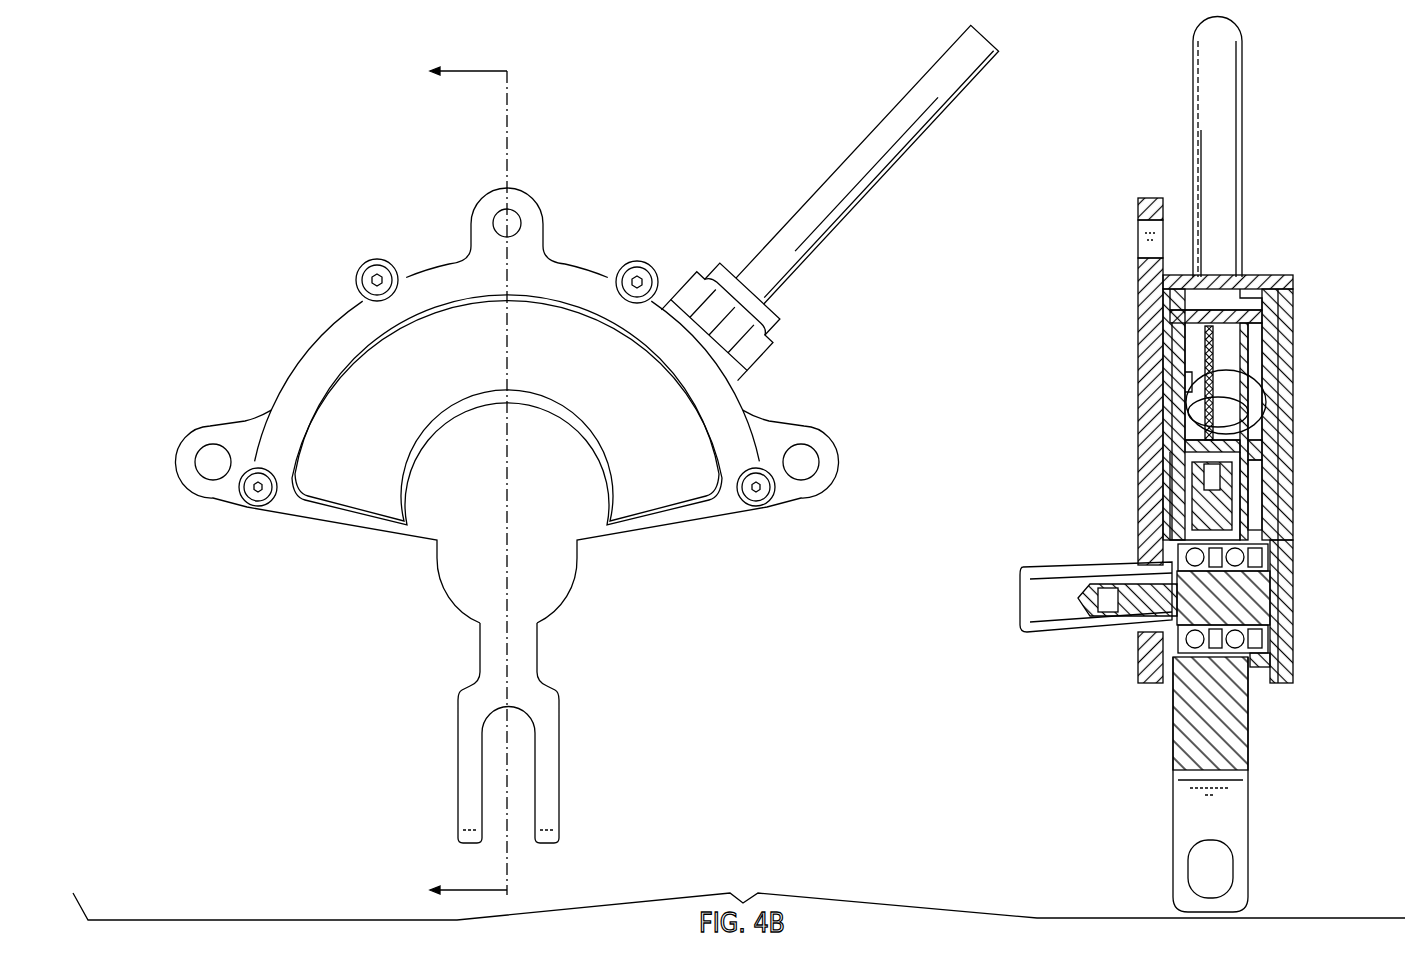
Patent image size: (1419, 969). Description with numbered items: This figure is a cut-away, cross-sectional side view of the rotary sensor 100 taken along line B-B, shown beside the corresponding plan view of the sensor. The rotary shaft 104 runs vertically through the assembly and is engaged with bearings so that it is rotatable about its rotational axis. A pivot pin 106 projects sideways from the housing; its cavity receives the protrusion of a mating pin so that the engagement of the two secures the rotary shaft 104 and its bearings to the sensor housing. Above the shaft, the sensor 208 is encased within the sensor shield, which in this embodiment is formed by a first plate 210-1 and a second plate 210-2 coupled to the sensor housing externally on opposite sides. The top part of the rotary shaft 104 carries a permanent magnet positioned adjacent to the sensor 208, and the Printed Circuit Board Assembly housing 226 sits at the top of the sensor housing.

The rotary sensor 100 is at (272, 300).
The rotary shaft 104 is at (1185, 732).
The pivot pin 106 is at (1045, 566).
The sensor 208 is at (1205, 360).
The first plate 210-1 is at (1163, 420).
The second plate 210-2 is at (1293, 424).
The Printed Circuit Board Assembly (PCBA) housing 226 is at (1237, 292).